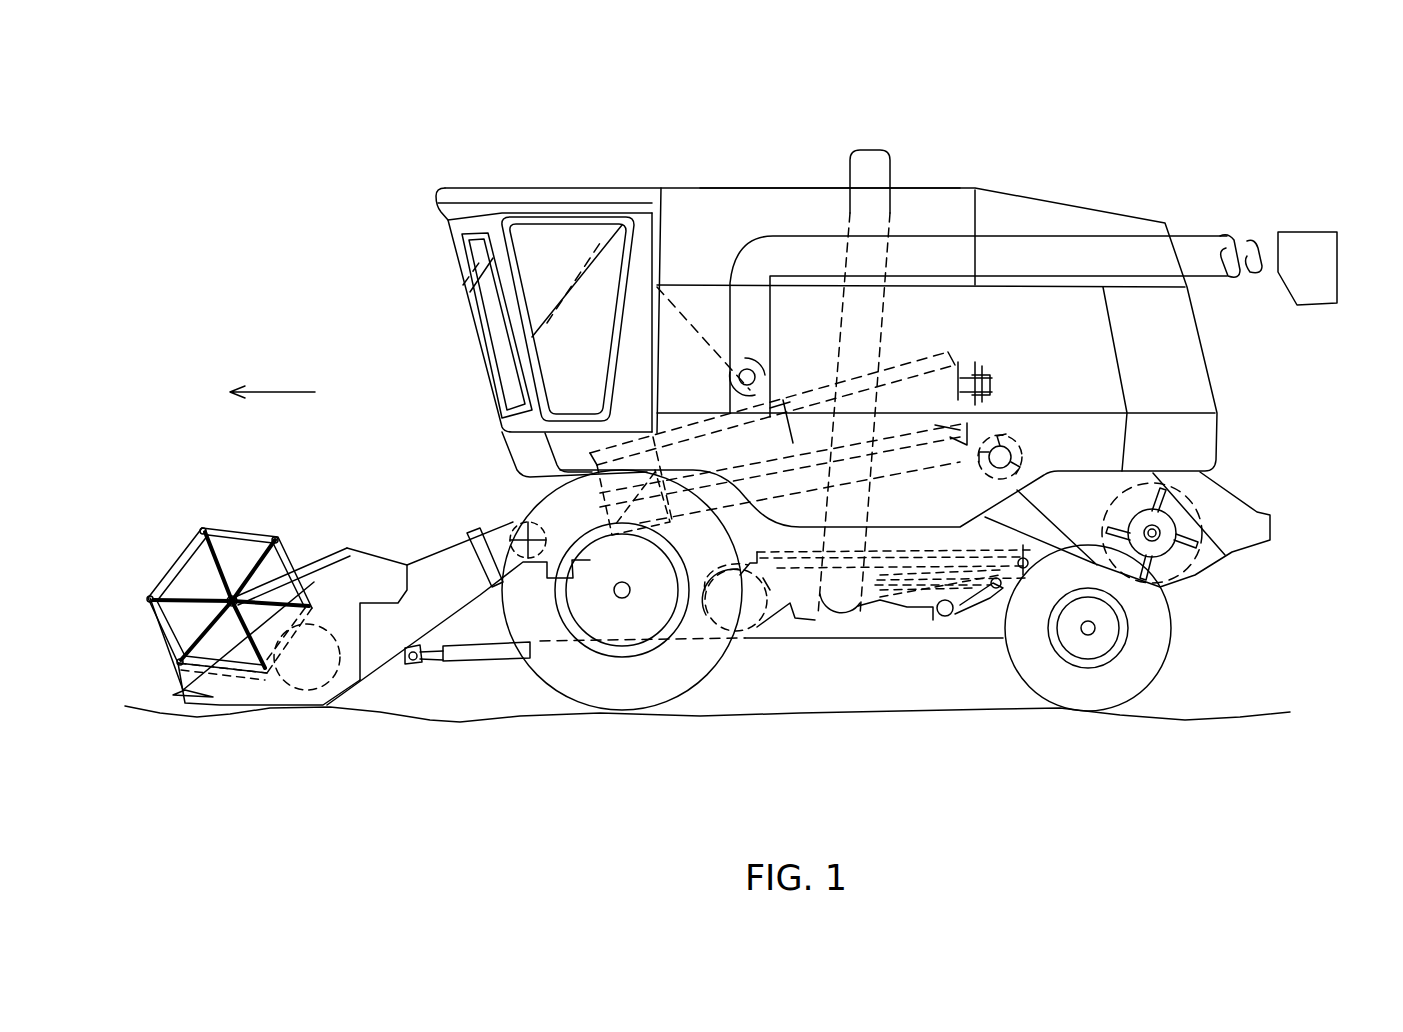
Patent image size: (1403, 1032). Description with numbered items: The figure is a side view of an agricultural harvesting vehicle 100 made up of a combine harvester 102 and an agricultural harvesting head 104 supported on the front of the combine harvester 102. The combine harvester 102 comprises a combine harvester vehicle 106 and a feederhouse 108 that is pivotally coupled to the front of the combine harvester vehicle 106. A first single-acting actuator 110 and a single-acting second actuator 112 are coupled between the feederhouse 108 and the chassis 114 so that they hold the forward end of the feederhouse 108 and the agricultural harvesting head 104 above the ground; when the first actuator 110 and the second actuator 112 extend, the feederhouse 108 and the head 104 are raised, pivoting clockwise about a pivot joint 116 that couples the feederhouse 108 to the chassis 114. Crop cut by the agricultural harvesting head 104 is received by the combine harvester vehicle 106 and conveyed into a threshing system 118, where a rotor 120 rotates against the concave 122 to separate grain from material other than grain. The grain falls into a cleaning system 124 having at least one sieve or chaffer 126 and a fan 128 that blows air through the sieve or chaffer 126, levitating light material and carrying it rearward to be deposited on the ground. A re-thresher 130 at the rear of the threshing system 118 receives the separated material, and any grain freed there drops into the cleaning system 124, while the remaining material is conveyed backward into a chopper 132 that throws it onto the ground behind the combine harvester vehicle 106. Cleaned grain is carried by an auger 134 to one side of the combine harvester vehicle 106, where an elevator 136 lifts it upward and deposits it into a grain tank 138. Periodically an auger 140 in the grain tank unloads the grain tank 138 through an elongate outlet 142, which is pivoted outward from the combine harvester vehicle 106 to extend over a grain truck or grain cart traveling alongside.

The agricultural harvesting vehicle 100 is at (815, 108).
The combine harvester 102 is at (917, 187).
The agricultural harvesting head 104 is at (252, 706).
The combine harvester vehicle 106 is at (697, 187).
The feederhouse 108 is at (430, 553).
The first single-acting actuator 110 is at (493, 650).
The second actuator 112 is at (424, 654).
The chassis 114 is at (798, 640).
The pivot joint 116 is at (515, 522).
The threshing system 118 is at (929, 349).
The rotor 120 is at (952, 355).
The concave 122 is at (893, 487).
The cleaning system 124 is at (997, 662).
The sieve or chaffer 126 is at (925, 612).
The fan 128 is at (748, 640).
The re-thresher 130 is at (1032, 443).
The chopper 132 is at (1197, 573).
The auger 134 is at (848, 655).
The elevator 136 is at (837, 263).
The grain tank 138 is at (750, 187).
The auger 140 is at (738, 362).
The elongate outlet 142 is at (1043, 235).